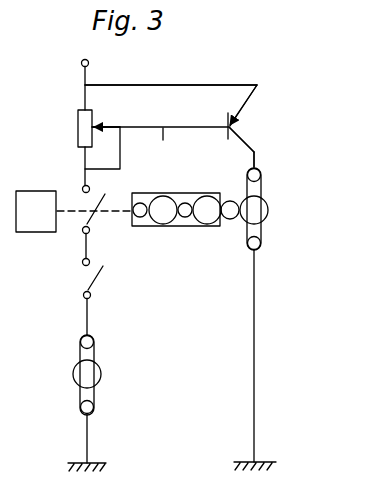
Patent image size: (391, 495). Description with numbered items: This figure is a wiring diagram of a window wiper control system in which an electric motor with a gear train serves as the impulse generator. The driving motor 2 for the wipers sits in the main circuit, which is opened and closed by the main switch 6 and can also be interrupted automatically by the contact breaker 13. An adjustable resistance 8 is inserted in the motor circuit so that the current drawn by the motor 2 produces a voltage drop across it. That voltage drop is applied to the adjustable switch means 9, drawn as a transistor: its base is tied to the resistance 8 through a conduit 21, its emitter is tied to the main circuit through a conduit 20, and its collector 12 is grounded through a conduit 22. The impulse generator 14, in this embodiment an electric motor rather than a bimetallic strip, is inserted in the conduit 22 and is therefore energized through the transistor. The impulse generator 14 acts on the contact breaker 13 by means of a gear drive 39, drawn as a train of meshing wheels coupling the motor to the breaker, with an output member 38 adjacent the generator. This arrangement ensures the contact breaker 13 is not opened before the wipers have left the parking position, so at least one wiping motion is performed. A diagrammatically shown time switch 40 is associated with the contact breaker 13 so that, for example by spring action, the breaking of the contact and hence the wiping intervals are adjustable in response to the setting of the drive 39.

The driving motor 2 is at (94, 352).
The main switch 6 is at (100, 274).
The adjustable resistance 8 is at (76, 124).
The adjustable switch means 9 is at (252, 111).
The collector 12 is at (245, 136).
The contact breaker 13 is at (95, 222).
The impulse generator 14 is at (272, 184).
The conduit 20 is at (224, 84).
The conduit 21 is at (161, 144).
The conduit 22 is at (256, 158).
The relay contact member 38 is at (270, 211).
The gear drive 39 is at (182, 229).
The time switch 40 is at (35, 189).